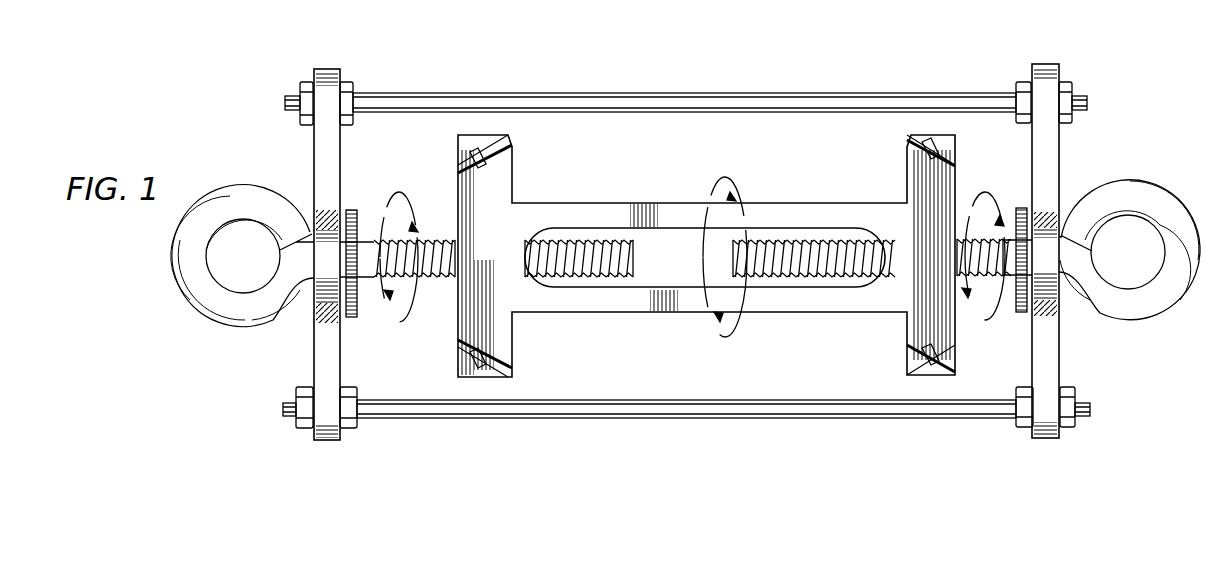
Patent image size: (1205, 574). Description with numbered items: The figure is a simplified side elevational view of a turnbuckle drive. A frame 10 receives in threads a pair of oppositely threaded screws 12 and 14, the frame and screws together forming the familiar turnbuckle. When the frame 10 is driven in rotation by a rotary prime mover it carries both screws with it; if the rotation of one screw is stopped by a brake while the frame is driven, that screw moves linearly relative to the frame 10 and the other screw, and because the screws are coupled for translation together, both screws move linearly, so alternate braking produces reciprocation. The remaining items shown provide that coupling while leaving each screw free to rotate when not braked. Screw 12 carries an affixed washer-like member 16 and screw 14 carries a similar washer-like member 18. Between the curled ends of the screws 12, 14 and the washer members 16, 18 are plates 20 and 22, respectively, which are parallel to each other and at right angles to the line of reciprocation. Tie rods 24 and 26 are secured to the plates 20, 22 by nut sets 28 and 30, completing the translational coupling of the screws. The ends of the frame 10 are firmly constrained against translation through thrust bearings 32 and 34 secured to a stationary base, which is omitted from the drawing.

The frame 10 is at (600, 203).
The screw 12 is at (444, 240).
The screw 14 is at (1009, 247).
The washer-like member 16 is at (350, 210).
The washer-like member 18 is at (1033, 208).
The plate 20 is at (341, 72).
The plate 22 is at (1059, 70).
The tie rod 24 is at (637, 78).
The tie rod 26 is at (792, 419).
The nut set 28 is at (300, 86).
The nut set 30 is at (305, 430).
The thrust bearing 32 is at (513, 148).
The thrust bearing 34 is at (906, 150).